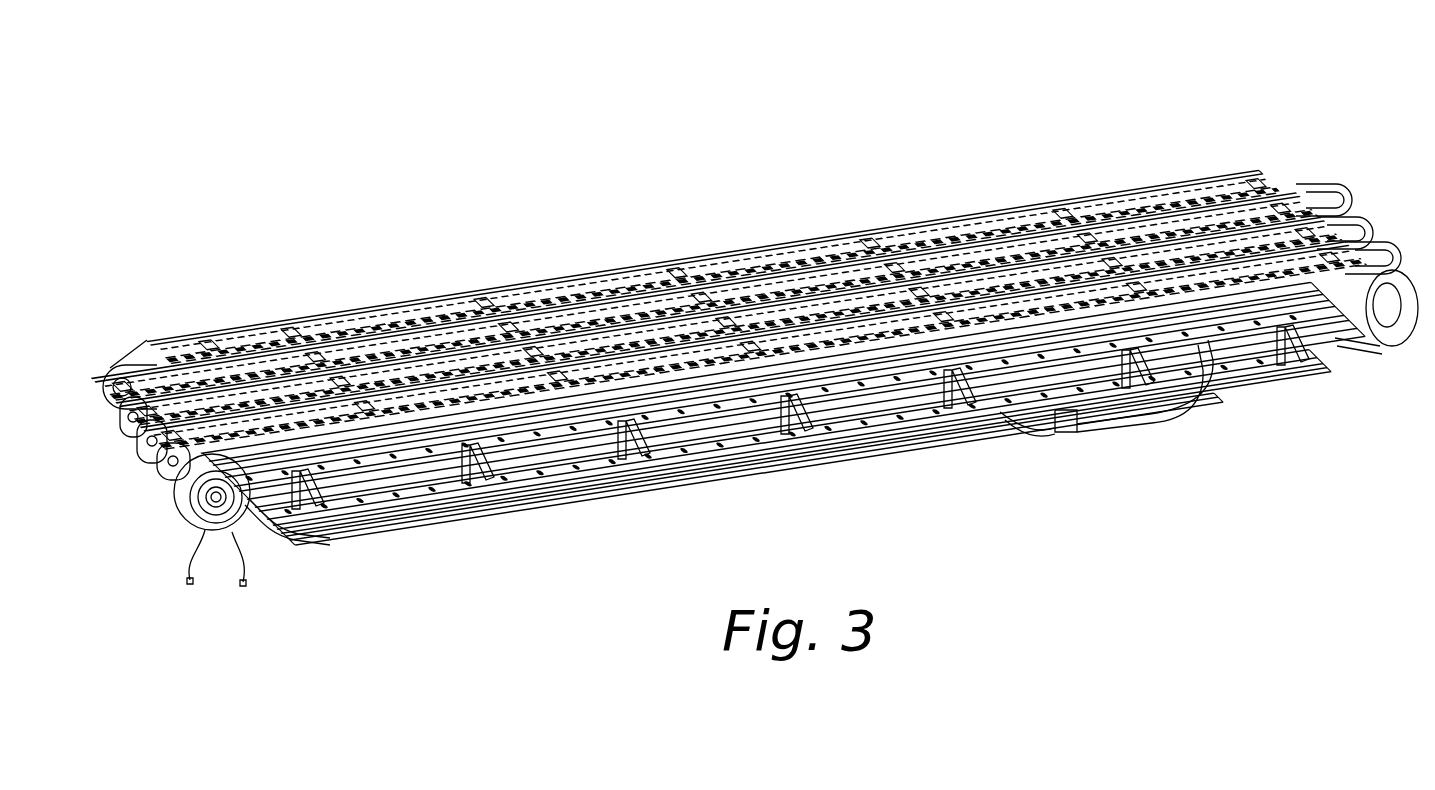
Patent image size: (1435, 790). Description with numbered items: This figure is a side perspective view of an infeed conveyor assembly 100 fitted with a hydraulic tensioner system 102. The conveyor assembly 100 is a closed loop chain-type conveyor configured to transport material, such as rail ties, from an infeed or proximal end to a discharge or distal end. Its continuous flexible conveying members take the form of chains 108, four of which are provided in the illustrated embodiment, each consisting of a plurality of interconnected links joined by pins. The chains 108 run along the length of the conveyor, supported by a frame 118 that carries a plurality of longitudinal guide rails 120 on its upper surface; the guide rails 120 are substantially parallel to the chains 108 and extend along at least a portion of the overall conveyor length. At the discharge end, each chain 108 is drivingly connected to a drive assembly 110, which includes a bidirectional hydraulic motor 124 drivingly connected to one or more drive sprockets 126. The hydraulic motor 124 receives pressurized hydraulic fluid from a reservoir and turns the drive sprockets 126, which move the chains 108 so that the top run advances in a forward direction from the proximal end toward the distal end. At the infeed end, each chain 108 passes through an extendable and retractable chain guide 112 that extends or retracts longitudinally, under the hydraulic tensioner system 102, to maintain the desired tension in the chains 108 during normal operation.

The conveyor assembly 100 is at (387, 168).
The hydraulic tensioner system 102 is at (1081, 443).
The chain 108 is at (1340, 207).
The drive assembly 110 is at (229, 560).
The chain guide 112 is at (1405, 288).
The frame 118 is at (480, 483).
The longitudinal guide rails 120 is at (323, 323).
The bidirectional hydraulic motor 124 is at (190, 508).
The drive sprockets 126 is at (135, 375).